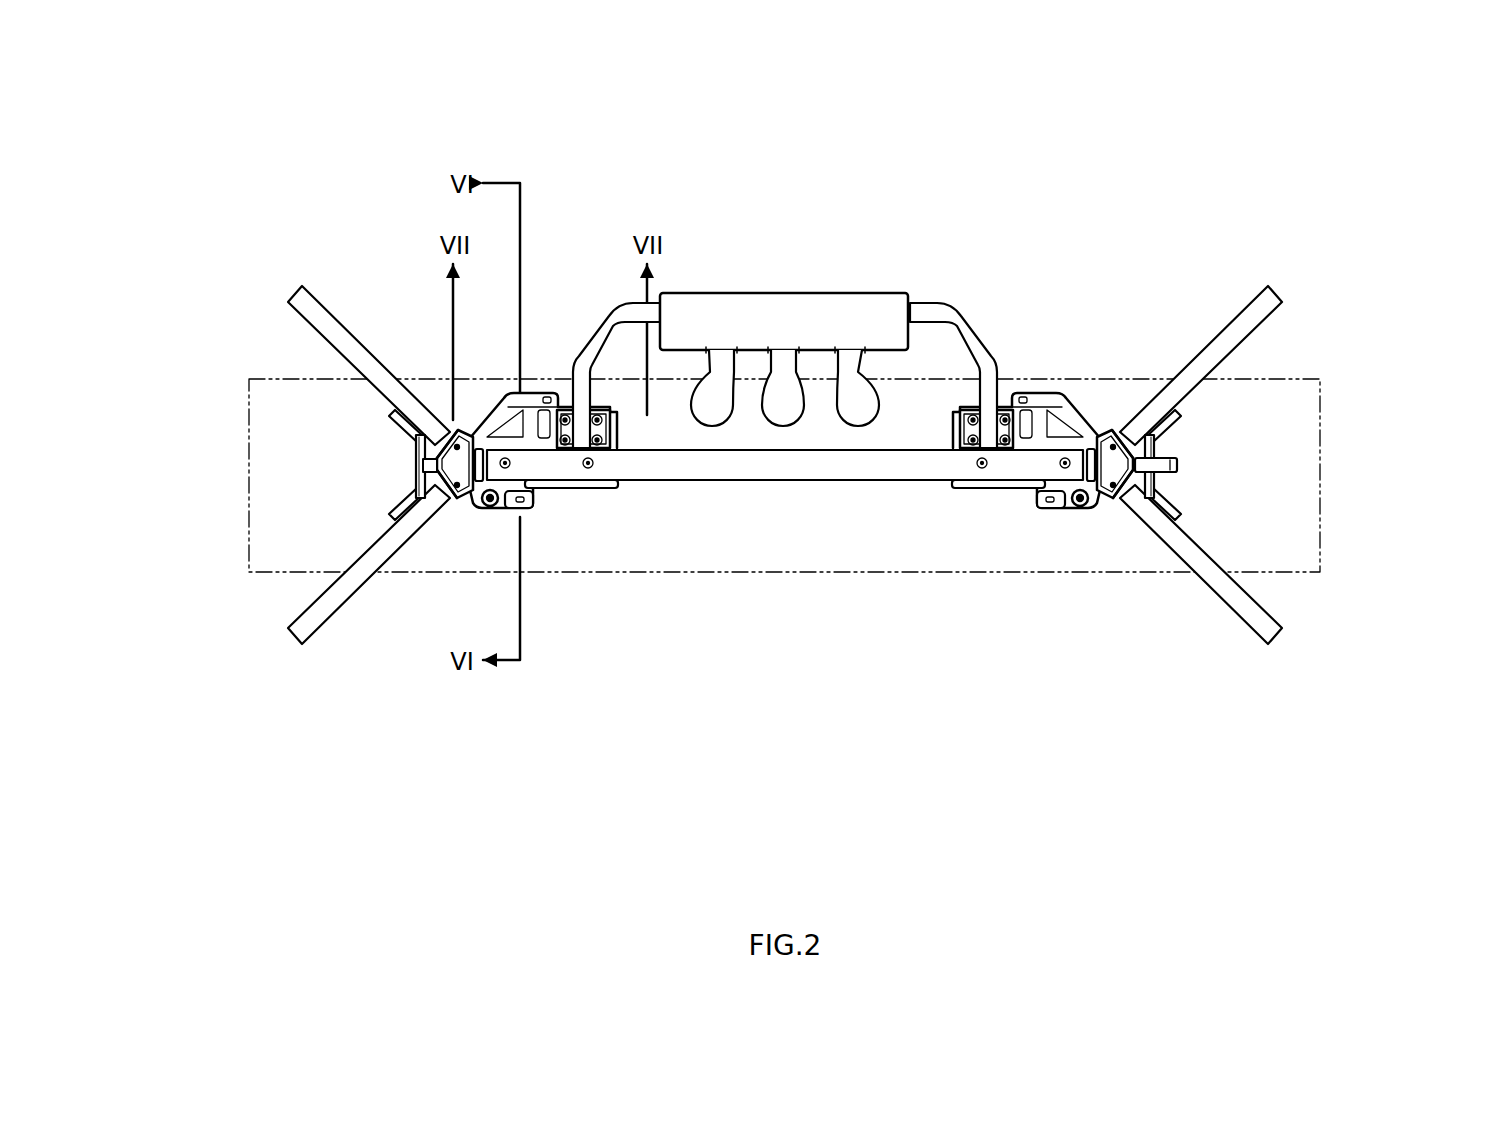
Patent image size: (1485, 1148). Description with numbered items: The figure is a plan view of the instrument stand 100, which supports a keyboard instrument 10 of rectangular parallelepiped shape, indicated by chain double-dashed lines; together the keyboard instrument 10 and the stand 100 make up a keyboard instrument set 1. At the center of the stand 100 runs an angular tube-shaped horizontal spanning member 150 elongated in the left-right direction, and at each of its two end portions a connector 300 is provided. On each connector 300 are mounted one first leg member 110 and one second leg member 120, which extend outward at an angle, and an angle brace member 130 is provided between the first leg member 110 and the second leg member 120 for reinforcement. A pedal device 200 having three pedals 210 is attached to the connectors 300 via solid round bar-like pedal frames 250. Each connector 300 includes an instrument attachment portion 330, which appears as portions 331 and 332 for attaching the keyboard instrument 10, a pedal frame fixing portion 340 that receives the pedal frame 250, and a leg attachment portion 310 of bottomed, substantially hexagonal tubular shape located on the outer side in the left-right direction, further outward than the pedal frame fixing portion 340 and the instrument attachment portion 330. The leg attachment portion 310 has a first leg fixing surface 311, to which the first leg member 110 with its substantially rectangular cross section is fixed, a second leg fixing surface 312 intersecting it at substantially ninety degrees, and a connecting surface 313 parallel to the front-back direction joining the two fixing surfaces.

The keyboard instrument set 1 is at (784, 427).
The keyboard instrument 10 is at (1272, 380).
The instrument stand 100 is at (784, 427).
The first leg member 110 is at (300, 630).
The second leg member 120 is at (305, 300).
The angle brace member 130 is at (413, 483).
The horizontal spanning member 150 is at (862, 485).
The pedal device 200 is at (866, 290).
The pedal 210 is at (856, 420).
The pedal frame 250 is at (610, 327).
The connector 300 is at (1105, 300).
The leg attachment portion 310 is at (784, 458).
The first leg fixing surface 311 is at (447, 493).
The second leg fixing surface 312 is at (446, 433).
The connecting surface 313 is at (433, 458).
The instrument attachment portion 330 is at (765, 427).
The instrument attachment portion 331 is at (492, 517).
The instrument attachment portion 332 is at (1040, 390).
The pedal frame fixing portion 340 is at (628, 433).